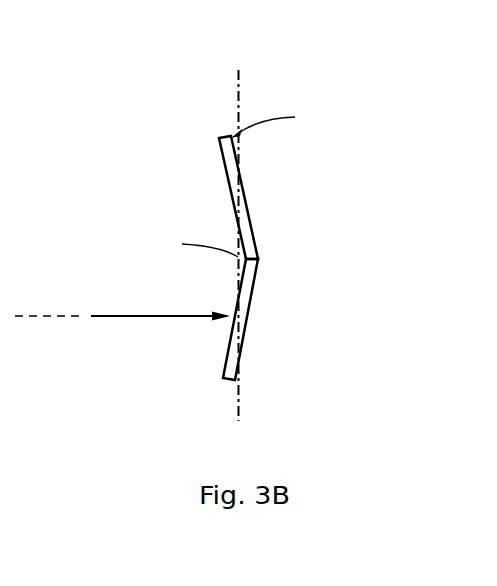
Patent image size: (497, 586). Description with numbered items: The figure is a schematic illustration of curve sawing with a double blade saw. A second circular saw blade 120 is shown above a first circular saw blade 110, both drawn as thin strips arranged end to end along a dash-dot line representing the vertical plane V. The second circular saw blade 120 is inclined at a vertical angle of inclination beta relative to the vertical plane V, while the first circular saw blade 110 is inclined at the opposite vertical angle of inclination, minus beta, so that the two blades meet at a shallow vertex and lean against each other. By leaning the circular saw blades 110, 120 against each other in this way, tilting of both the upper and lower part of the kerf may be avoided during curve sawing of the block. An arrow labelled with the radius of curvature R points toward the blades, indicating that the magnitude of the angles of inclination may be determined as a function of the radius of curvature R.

The second circular saw blade 120 is at (240, 185).
The first circular saw blade 110 is at (247, 332).
The vertical plane V is at (242, 228).
The radius of curvature R is at (122, 303).